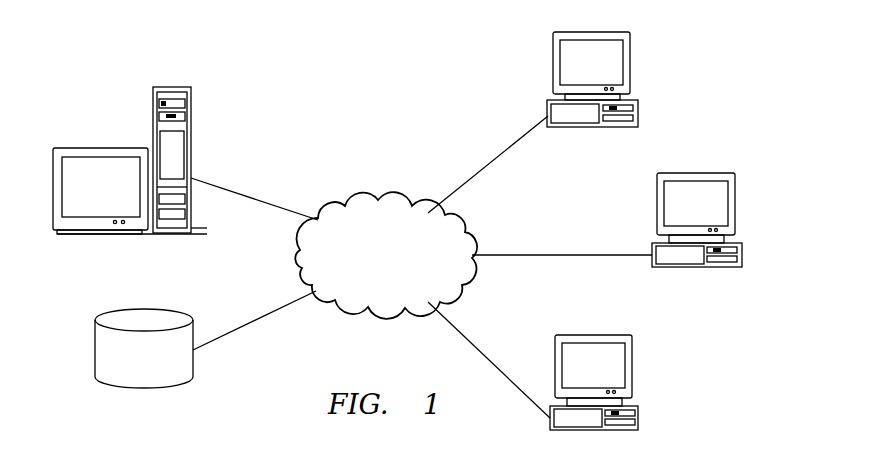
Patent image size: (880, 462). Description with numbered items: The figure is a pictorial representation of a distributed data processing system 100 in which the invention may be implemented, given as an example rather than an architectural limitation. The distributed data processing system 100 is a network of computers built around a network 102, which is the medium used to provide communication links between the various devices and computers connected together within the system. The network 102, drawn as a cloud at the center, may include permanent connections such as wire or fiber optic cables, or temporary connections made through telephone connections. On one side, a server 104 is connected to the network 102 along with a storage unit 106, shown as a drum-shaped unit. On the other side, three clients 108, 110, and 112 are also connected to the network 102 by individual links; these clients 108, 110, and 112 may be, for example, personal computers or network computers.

The distributed data processing system 100 is at (270, 80).
The network 102 is at (406, 269).
The server 104 is at (153, 108).
The storage unit 106 is at (95, 350).
The client 108 is at (630, 71).
The client 110 is at (735, 210).
The client 112 is at (632, 372).